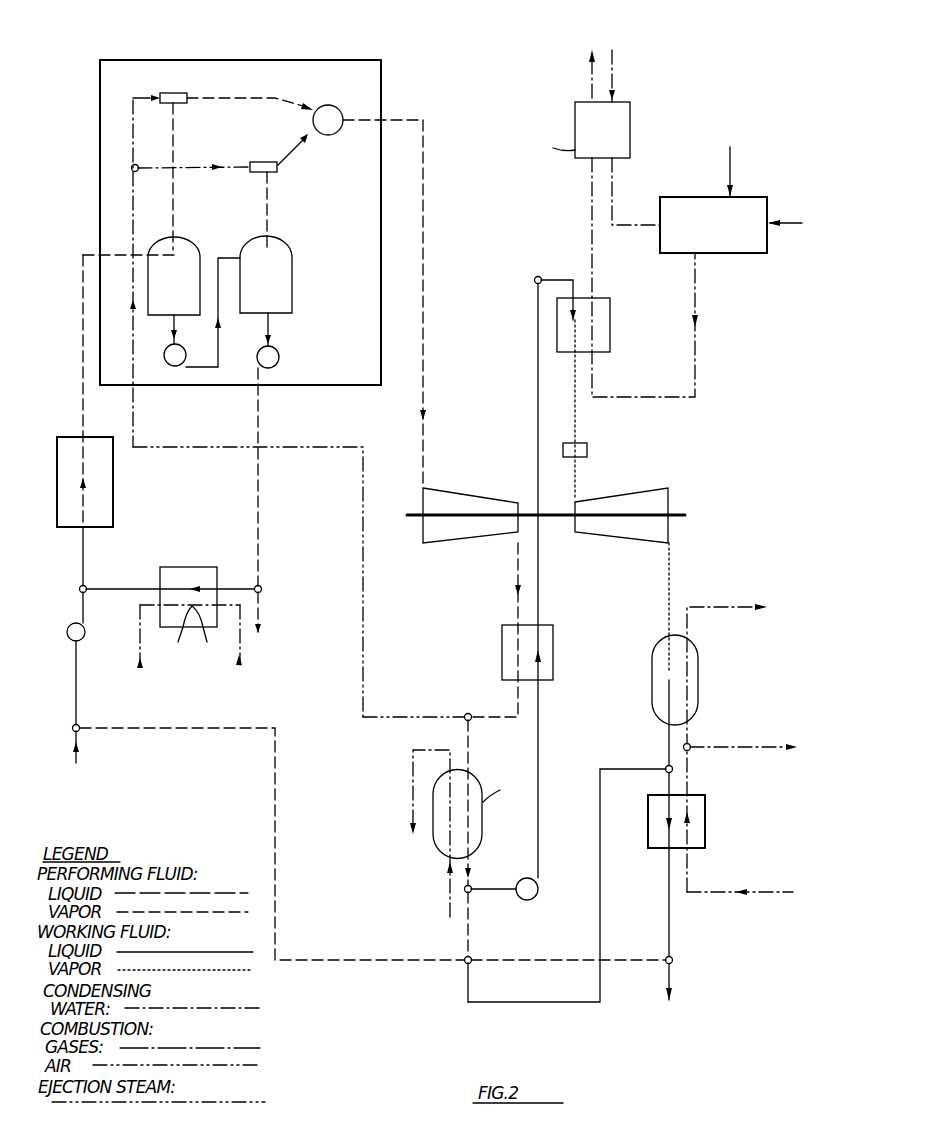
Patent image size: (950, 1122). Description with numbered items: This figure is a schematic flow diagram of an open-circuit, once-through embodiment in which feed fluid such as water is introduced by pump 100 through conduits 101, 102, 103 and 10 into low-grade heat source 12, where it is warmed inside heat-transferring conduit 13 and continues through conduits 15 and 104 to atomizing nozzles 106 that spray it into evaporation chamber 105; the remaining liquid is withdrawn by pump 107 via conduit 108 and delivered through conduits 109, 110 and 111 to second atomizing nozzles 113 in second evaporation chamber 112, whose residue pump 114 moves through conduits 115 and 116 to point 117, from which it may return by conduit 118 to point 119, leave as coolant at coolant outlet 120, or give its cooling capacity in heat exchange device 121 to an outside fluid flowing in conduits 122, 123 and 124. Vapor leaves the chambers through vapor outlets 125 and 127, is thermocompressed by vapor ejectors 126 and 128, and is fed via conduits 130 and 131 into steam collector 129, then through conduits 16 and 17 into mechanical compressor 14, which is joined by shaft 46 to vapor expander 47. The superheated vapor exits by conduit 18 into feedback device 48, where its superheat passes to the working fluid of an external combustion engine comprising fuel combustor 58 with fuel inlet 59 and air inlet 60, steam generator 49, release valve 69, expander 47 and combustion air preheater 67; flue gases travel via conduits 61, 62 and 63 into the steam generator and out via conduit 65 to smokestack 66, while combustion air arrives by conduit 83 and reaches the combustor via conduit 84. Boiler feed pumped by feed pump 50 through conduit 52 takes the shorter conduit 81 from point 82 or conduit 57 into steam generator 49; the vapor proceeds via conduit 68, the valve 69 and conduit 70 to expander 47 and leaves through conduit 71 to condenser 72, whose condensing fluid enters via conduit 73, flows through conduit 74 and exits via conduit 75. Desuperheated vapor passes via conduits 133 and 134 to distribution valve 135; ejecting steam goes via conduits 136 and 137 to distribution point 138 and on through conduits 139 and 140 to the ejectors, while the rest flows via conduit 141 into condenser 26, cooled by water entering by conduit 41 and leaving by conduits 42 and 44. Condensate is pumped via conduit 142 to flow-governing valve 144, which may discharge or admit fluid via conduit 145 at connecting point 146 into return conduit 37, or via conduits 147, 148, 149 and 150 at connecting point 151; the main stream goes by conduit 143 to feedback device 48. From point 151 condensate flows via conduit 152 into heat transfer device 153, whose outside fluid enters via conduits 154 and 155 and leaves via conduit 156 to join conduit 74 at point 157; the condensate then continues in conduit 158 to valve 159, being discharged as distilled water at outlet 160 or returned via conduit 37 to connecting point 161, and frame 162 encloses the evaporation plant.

The conduit 10 is at (87, 538).
The low-grade heat source 12 is at (113, 512).
The conduit 13 is at (80, 482).
The compressor 14 is at (460, 543).
The conduit 15 is at (83, 410).
The conduit 16 is at (393, 120).
The conduit 17 is at (425, 263).
The conduit 18 is at (517, 578).
The condenser 26 is at (482, 832).
The liquid fluid return conduit 37 is at (243, 730).
The conduit 41 is at (448, 900).
The conduit 42 is at (410, 750).
The conduit 44 is at (413, 817).
The shaft 46 is at (555, 517).
The vapor expander 47 is at (668, 502).
The feedback device 48 is at (553, 653).
The steam generator 49 is at (610, 298).
The feed pump 50 is at (538, 889).
The conduit 52 is at (540, 595).
The conduit 57 is at (565, 288).
The fuel combustor 58 is at (732, 255).
The fuel inlet 59 is at (788, 227).
The air inlet 60 is at (732, 162).
The conduit 61 is at (695, 375).
The conduit 62 is at (627, 397).
The conduit 63 is at (593, 365).
The conduit 65 is at (588, 203).
The smokestack 66 is at (588, 72).
The combustion air preheater 67 is at (632, 123).
The conduit 68 is at (575, 420).
The governing valve 69 is at (587, 457).
The conduit 70 is at (575, 490).
The conduit 71 is at (672, 585).
The condenser 72 is at (698, 690).
The conduit 73 is at (700, 752).
The conduit 74 is at (688, 632).
The conduit 75 is at (750, 618).
The conduit 81 is at (570, 278).
The point 82 is at (535, 278).
The conduit 83 is at (613, 67).
The conduit 84 is at (613, 195).
The pump 100 is at (67, 636).
The conduit 101 is at (76, 762).
The conduit 102 is at (76, 707).
The conduit 103 is at (81, 615).
The conduit 104 is at (97, 273).
The evaporation chamber 105 is at (172, 325).
The atomizing nozzles 106 is at (173, 252).
The pump 107 is at (165, 360).
The conduit 108 is at (176, 326).
The conduit 109 is at (218, 367).
The conduit 110 is at (268, 325).
The conduit 111 is at (267, 223).
The second evaporation chamber 112 is at (292, 305).
The second set of atomizing nozzles 113 is at (273, 247).
The pump 114 is at (280, 358).
The conduit 115 is at (273, 333).
The conduit 116 is at (258, 533).
The point 117 is at (260, 587).
The conduit 118 is at (140, 585).
The point 119 is at (80, 588).
The coolant outlet 120 is at (297, 624).
The heat exchange device 121 is at (180, 633).
The conduit 122 is at (140, 643).
The conduit 123 is at (206, 635).
The conduit 124 is at (233, 657).
The vapor outlet 125 is at (173, 197).
The vapor ejector 126 is at (165, 103).
The vapor outlet 127 is at (267, 228).
The vapor ejector 128 is at (258, 172).
The steam collector 129 is at (330, 135).
The conduit 130 is at (272, 97).
The conduit 131 is at (292, 148).
The conduit 133 is at (518, 690).
The conduit 134 is at (490, 718).
The distribution valve 135 is at (468, 713).
The conduit 136 is at (365, 545).
The conduit 137 is at (133, 417).
The distribution point 138 is at (131, 167).
The conduit 139 is at (132, 100).
The conduit 140 is at (212, 166).
The conduit 141 is at (465, 733).
The conduit 142 is at (473, 863).
The conduit 143 is at (484, 893).
The flow-governing valve 144 is at (465, 892).
The conduit 145 is at (473, 927).
The connecting point 146 is at (465, 963).
The conduit 147 is at (467, 983).
The conduit 148 is at (533, 1000).
The conduit 149 is at (600, 813).
The conduit 150 is at (627, 768).
The connecting point 151 is at (665, 771).
The conduit 152 is at (648, 797).
The heat transfer device 153 is at (705, 850).
The conduit 154 is at (785, 895).
The conduit 155 is at (692, 888).
The conduit 156 is at (690, 782).
The point 157 is at (672, 748).
The conduit 158 is at (669, 905).
The valve 159 is at (672, 958).
The outlet 160 is at (672, 977).
The connecting point 161 is at (79, 732).
The frame 162 is at (224, 60).